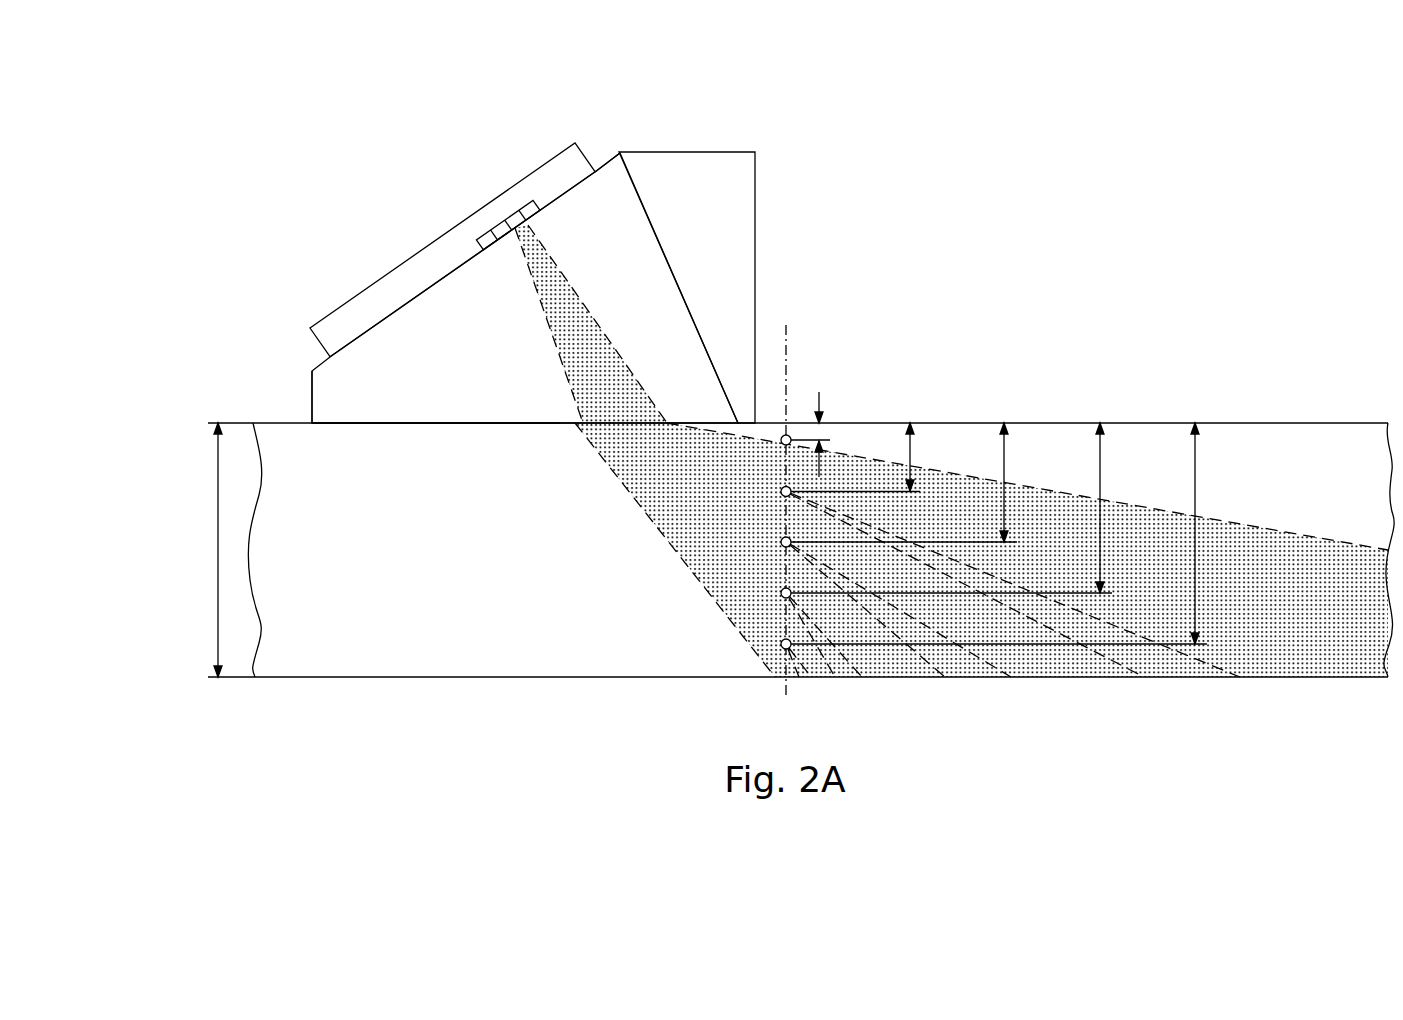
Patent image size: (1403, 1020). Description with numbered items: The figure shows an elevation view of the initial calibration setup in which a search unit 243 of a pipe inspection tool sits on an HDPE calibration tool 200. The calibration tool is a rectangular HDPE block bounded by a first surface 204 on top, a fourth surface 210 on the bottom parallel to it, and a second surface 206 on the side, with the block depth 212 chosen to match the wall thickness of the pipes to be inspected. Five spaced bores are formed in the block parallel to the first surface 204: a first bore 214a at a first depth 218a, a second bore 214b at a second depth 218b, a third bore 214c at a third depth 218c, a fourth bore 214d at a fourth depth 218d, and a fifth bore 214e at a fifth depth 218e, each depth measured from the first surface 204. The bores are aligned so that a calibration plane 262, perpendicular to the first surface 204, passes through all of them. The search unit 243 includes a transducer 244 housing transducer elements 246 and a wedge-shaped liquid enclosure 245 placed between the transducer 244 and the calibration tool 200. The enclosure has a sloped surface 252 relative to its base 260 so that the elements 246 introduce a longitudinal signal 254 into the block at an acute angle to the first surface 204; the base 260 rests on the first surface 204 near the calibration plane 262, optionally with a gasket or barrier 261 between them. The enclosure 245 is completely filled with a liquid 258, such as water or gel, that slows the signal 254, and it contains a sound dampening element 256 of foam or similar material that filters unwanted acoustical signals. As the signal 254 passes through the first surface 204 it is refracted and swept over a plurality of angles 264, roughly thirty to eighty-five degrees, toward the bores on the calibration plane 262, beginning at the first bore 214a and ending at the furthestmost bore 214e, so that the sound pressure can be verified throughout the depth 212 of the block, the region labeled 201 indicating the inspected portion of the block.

The HDPE calibration tool 200 is at (1181, 350).
The inspection region 201 is at (1236, 404).
The first surface 204 is at (1297, 422).
The second surface 206 is at (388, 570).
The fourth surface 210 is at (501, 680).
The depth 212 is at (217, 550).
The first bore 214a is at (781, 441).
The second bore 214b is at (781, 492).
The third bore 214c is at (781, 543).
The fourth bore 214d is at (781, 594).
The fifth bore 214e is at (781, 645).
The first depth 218a is at (820, 392).
The second depth 218b is at (912, 462).
The third depth 218c is at (1006, 470).
The fourth depth 218d is at (1102, 481).
The fifth depth 218e is at (1197, 493).
The search unit 243 is at (346, 119).
The transducer 244 is at (405, 261).
The liquid enclosure 245 is at (300, 388).
The transducer elements 246 is at (505, 212).
The sloped surface 252 is at (600, 162).
The longitudinal signal 254 is at (606, 301).
The sound dampening element 256 is at (692, 158).
The liquid 258 is at (388, 371).
The base 260 is at (451, 428).
The barrier 261 is at (353, 428).
The calibration plane 262 is at (789, 340).
The plurality of angles 264 is at (639, 497).